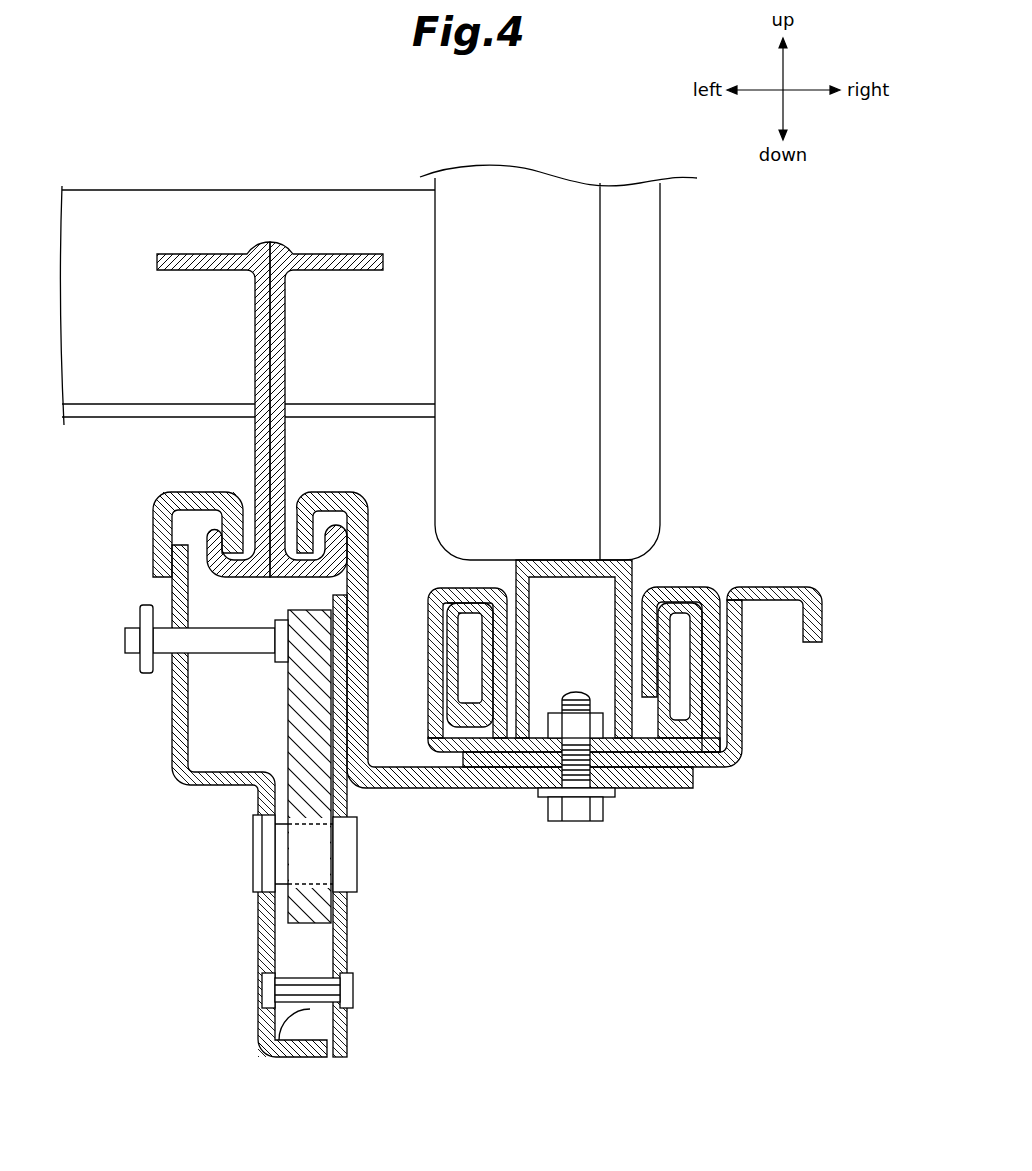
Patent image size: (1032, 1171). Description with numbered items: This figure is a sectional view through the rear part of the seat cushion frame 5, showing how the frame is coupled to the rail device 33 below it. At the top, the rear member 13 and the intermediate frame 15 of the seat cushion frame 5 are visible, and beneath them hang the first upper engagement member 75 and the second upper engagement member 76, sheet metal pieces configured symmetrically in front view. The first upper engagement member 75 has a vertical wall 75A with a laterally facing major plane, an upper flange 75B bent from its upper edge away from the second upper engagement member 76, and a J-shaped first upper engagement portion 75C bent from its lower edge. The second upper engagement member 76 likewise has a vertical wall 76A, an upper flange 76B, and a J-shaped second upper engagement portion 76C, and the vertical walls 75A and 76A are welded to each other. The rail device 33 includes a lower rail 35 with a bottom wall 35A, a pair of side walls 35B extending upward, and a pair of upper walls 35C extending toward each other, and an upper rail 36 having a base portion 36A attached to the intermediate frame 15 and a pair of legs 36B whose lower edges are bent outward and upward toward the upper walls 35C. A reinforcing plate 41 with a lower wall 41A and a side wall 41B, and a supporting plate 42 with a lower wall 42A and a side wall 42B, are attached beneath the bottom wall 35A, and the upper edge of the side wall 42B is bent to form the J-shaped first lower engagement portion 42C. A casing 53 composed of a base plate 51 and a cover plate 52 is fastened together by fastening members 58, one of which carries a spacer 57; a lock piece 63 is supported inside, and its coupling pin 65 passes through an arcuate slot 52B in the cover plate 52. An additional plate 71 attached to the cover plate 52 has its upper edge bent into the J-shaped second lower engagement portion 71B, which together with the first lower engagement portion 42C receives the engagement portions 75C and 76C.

The seat cushion frame 5 is at (249, 340).
The rear member 13 is at (382, 195).
The intermediate frame 15 is at (663, 365).
The rail device 33 is at (705, 573).
The lower rail 35 is at (643, 680).
The bottom wall 35A is at (640, 790).
The side walls 35B is at (735, 698).
The upper walls 35C is at (682, 587).
The upper rail 36 is at (574, 594).
The base portion 36A is at (585, 560).
The legs 36B is at (525, 674).
The reinforcing plate 41 is at (658, 722).
The lower wall 41A is at (485, 790).
The side wall 41B is at (745, 652).
The supporting plate 42 is at (503, 671).
The lower wall 42A is at (680, 790).
The side wall 42B is at (368, 612).
The first lower engagement portion 42C is at (340, 495).
The base plate 51 is at (247, 836).
The cover plate 52 is at (130, 673).
The arcuate slot 52B is at (172, 665).
The casing 53 is at (300, 1057).
The spacer 57 is at (283, 1022).
The fastening members 58 is at (253, 853).
The lock piece 63 is at (288, 742).
The coupling pin 65 is at (125, 640).
The additional plate 71 is at (161, 511).
The second lower engagement portion 71B is at (195, 492).
The first upper engagement member 75 is at (351, 362).
The vertical wall 75A is at (287, 388).
The upper flange 75B is at (322, 253).
The first upper engagement portion 75C is at (365, 540).
The second upper engagement member 76 is at (168, 357).
The vertical wall 76A is at (253, 306).
The upper flange 76B is at (188, 253).
The second upper engagement portion 76C is at (172, 535).